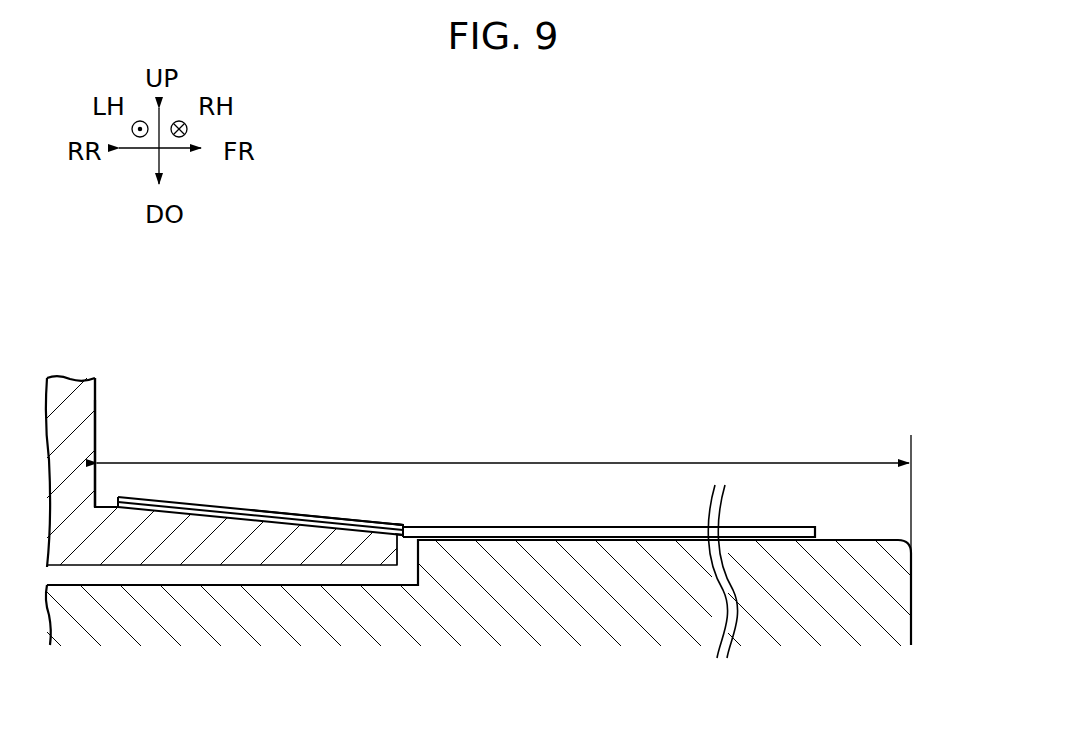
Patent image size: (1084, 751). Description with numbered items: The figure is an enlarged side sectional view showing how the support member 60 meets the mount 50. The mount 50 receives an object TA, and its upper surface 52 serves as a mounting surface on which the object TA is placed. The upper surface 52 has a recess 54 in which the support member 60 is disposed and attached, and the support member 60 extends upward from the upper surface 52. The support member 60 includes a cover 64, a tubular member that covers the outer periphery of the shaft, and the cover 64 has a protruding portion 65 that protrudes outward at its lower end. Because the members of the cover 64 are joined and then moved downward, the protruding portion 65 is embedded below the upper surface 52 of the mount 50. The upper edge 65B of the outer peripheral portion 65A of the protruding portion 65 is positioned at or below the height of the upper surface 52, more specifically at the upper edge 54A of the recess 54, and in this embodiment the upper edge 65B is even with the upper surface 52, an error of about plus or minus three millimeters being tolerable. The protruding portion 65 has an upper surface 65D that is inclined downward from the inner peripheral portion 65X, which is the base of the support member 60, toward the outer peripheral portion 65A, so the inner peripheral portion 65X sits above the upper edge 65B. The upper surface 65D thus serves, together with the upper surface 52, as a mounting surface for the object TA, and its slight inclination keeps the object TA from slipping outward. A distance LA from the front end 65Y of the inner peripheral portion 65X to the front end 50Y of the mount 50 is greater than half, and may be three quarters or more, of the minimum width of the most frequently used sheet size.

The mount 50 is at (916, 627).
The front end of the mount 50Y is at (915, 571).
The upper surface of the mount 52 is at (861, 535).
The recess 54 is at (340, 565).
The upper edge of the recess 54A is at (415, 524).
The support member 60 is at (100, 395).
The cover 64 is at (98, 437).
The protruding portion 65 is at (250, 557).
The outer peripheral portion of the protruding portion 65A is at (404, 556).
The upper edge of the outer peripheral portion 65B is at (405, 527).
The upper surface of the protruding portion 65D is at (314, 516).
The inner peripheral portion of the protruding portion 65X is at (100, 495).
The front end of the inner peripheral portion 65Y is at (100, 495).
The distance LA is at (573, 462).
The object TA is at (623, 526).